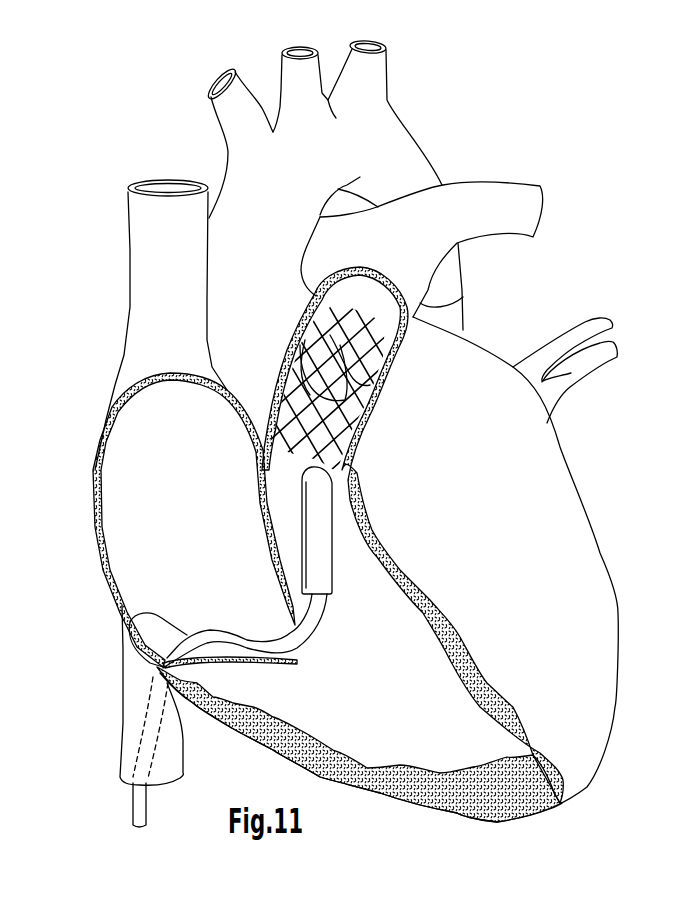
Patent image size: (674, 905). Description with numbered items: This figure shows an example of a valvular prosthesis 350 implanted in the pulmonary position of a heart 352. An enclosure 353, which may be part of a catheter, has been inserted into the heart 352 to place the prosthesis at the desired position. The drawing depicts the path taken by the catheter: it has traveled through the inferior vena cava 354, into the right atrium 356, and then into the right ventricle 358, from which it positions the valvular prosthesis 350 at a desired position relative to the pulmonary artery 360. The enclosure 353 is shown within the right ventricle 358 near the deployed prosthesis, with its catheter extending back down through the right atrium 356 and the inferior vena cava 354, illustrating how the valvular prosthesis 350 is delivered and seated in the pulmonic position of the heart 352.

The valvular prosthesis 350 is at (402, 388).
The heart 352 is at (583, 447).
The enclosure 353 is at (327, 547).
The inferior vena cava 354 is at (127, 737).
The right atrium 356 is at (205, 524).
The right ventricle 358 is at (400, 711).
The pulmonary artery 360 is at (463, 297).